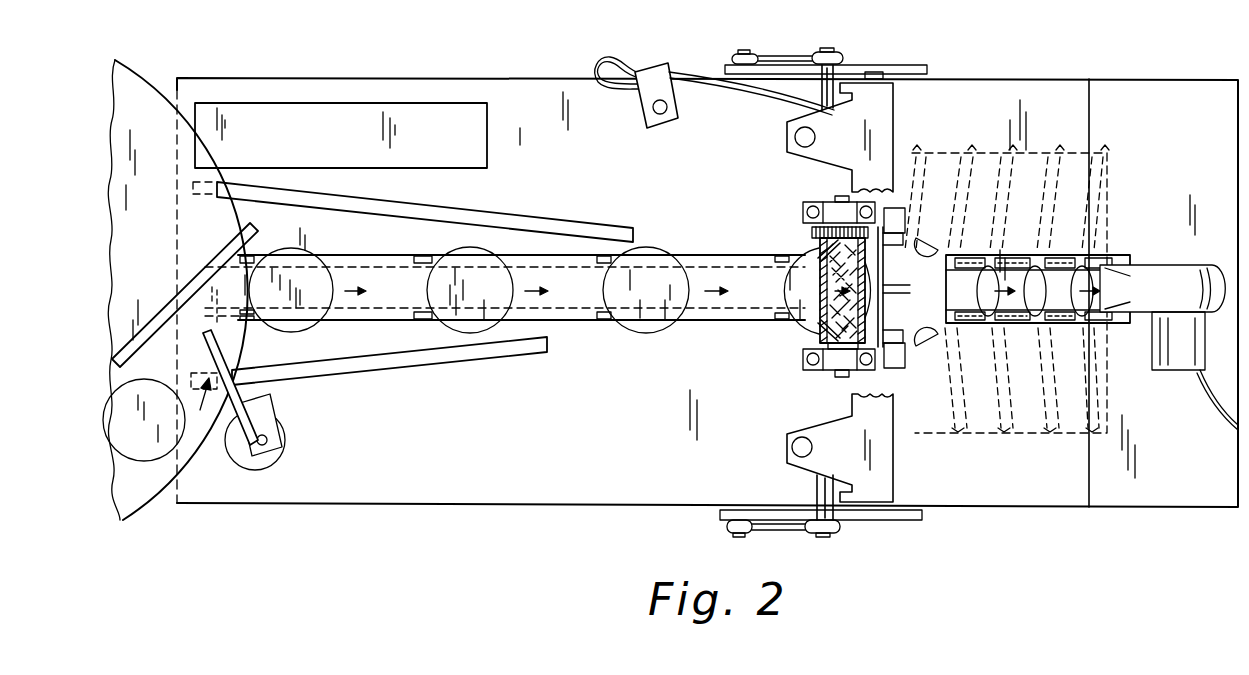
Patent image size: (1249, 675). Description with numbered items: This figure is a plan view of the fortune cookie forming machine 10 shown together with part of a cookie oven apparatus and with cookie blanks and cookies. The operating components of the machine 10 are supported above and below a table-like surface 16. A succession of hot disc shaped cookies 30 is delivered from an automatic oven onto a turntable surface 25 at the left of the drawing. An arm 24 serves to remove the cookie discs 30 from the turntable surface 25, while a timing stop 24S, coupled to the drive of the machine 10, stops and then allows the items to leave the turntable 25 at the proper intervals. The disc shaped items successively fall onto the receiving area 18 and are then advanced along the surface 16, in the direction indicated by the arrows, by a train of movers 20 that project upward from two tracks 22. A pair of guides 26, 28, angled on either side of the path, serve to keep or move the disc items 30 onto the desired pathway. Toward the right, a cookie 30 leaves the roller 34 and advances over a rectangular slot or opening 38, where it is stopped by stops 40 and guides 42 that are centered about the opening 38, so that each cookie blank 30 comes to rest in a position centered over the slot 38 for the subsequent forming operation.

The machine 10 is at (1062, 58).
The table-like surface 16 is at (612, 482).
The receiving area 18 is at (292, 335).
The movers 20 is at (252, 257).
The tracks 22 is at (373, 262).
The arm 24 is at (158, 312).
The timing stop 24S is at (228, 440).
The turntable surface 25 is at (168, 468).
The guide 26 is at (483, 352).
The guide 28 is at (558, 227).
The disc shaped cookies 30 is at (147, 455).
The roller 34 is at (815, 270).
The rectangular slot or opening 38 is at (905, 318).
The stops 40 is at (925, 235).
The guides 42 is at (896, 205).